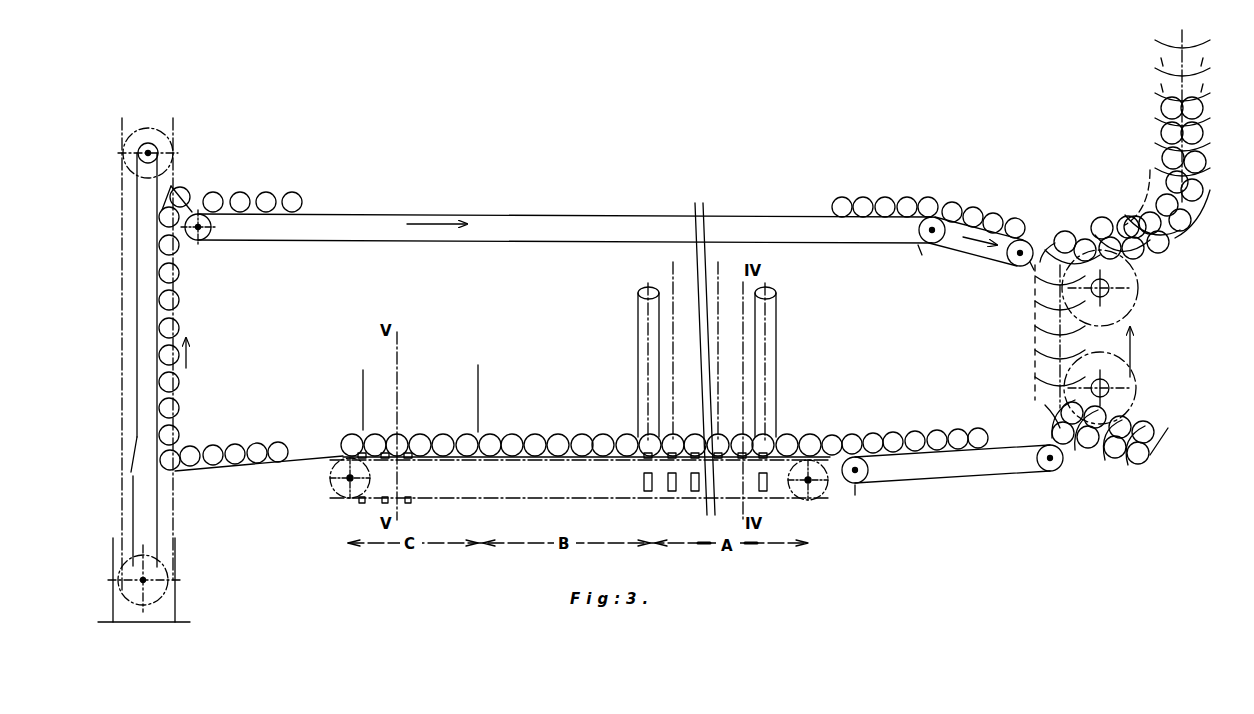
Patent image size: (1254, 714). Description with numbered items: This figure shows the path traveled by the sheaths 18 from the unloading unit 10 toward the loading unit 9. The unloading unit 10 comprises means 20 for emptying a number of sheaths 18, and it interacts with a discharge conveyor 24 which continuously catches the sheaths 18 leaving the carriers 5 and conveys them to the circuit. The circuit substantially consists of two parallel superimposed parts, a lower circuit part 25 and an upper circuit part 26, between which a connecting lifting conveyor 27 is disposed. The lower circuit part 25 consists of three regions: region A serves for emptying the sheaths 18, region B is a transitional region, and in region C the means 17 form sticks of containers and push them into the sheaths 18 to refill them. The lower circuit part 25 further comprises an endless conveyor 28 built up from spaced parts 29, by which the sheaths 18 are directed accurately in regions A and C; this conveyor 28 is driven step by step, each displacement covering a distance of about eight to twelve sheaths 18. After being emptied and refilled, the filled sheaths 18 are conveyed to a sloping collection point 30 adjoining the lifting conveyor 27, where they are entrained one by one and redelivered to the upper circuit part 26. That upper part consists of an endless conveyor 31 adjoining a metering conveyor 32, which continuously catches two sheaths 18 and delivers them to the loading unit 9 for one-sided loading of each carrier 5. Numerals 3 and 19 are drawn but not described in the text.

The transfer wheel 3 is at (1137, 295).
The carrier 5 is at (1193, 210).
The loading unit 9 is at (1047, 230).
The unloading unit 10 is at (1043, 412).
The means for forming sticks of containers 17 is at (458, 416).
The sheaths 18 is at (538, 440).
The feed direction 19 is at (985, 204).
The means for emptying sheaths 20 is at (785, 418).
The discharge conveyor 24 is at (913, 470).
The lower circuit part 25 is at (563, 482).
The upper circuit part 26 is at (453, 207).
The lifting conveyor 27 is at (196, 312).
The endless conveyor 28 is at (430, 500).
The spaced parts 29 is at (750, 460).
The sloping collection point 30 is at (238, 476).
The endless conveyor 31 is at (413, 243).
The metering conveyor 32 is at (962, 255).